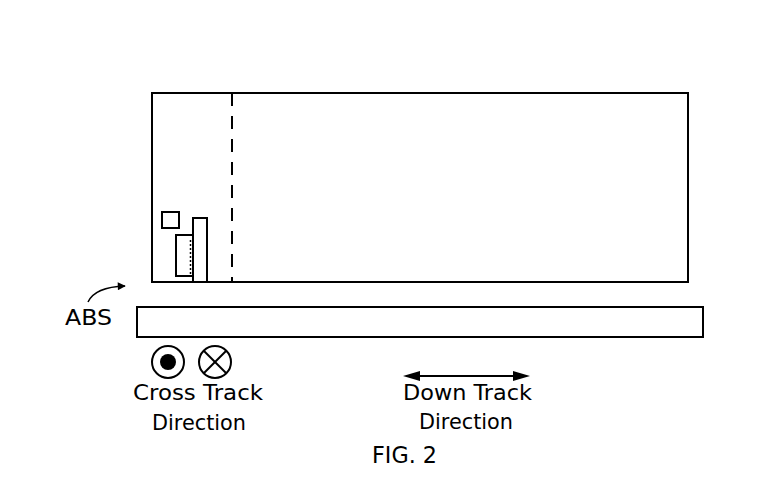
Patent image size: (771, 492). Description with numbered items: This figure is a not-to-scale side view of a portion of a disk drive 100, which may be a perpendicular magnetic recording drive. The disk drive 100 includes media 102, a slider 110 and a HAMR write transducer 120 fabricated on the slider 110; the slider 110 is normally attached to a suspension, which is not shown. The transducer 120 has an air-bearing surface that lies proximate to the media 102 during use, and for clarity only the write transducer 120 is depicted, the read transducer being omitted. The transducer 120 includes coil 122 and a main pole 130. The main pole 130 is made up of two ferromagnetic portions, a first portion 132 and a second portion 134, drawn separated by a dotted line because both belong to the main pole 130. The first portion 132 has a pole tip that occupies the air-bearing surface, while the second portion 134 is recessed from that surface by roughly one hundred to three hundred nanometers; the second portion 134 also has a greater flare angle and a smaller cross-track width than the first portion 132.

The disk drive 100 is at (422, 41).
The slider 110 is at (688, 155).
The HAMR transducer 120 is at (232, 142).
The coil 122 is at (167, 212).
The main pole 130 is at (50, 250).
The first portion of main pole 132 is at (202, 218).
The second portion of main pole 134 is at (176, 266).
The media 102 is at (137, 335).